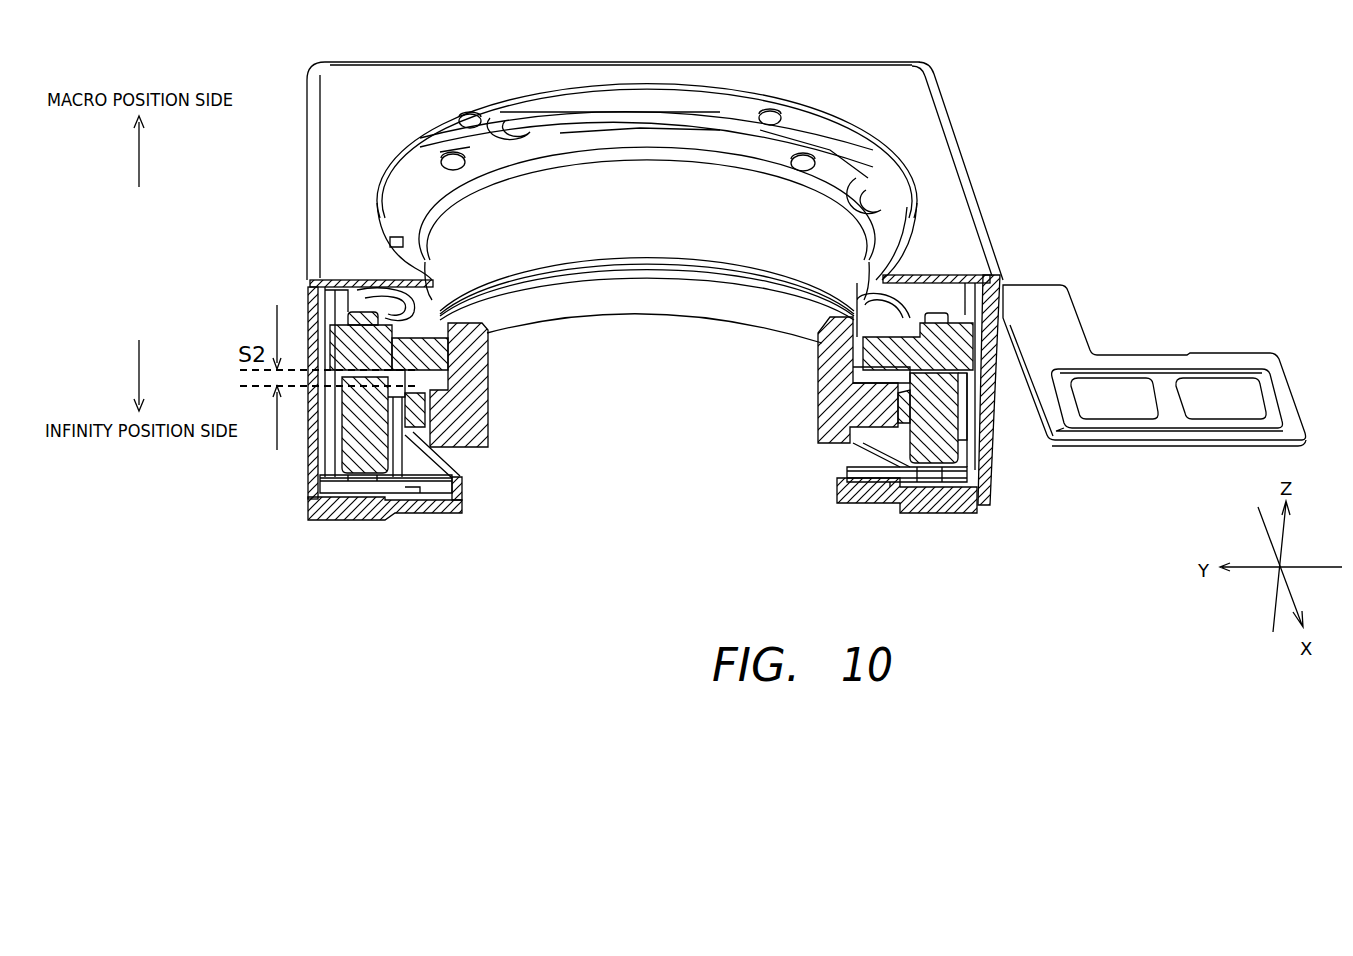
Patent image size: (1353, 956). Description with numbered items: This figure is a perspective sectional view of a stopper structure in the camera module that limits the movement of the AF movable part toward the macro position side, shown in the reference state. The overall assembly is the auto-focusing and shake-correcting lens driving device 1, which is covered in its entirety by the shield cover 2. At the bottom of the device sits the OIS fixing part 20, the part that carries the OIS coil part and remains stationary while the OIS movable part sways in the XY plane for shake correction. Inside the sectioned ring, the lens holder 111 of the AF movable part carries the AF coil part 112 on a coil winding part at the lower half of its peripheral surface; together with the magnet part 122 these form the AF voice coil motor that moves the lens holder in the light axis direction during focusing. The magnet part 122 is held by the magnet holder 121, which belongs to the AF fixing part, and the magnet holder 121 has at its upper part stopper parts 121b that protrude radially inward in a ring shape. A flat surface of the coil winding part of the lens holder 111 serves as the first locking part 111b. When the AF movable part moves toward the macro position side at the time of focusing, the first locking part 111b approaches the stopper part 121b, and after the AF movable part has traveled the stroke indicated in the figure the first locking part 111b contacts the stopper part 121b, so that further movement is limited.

The lens driving device 1 is at (638, 100).
The shield cover 2 is at (960, 173).
The OIS fixing part 20 is at (840, 500).
The lens holder 111 is at (835, 418).
The AF coil part 112 is at (898, 405).
The magnet holder 121 is at (957, 357).
The magnet part 122 is at (943, 447).
The first locking part 111b is at (418, 376).
The stopper part 121b is at (423, 355).